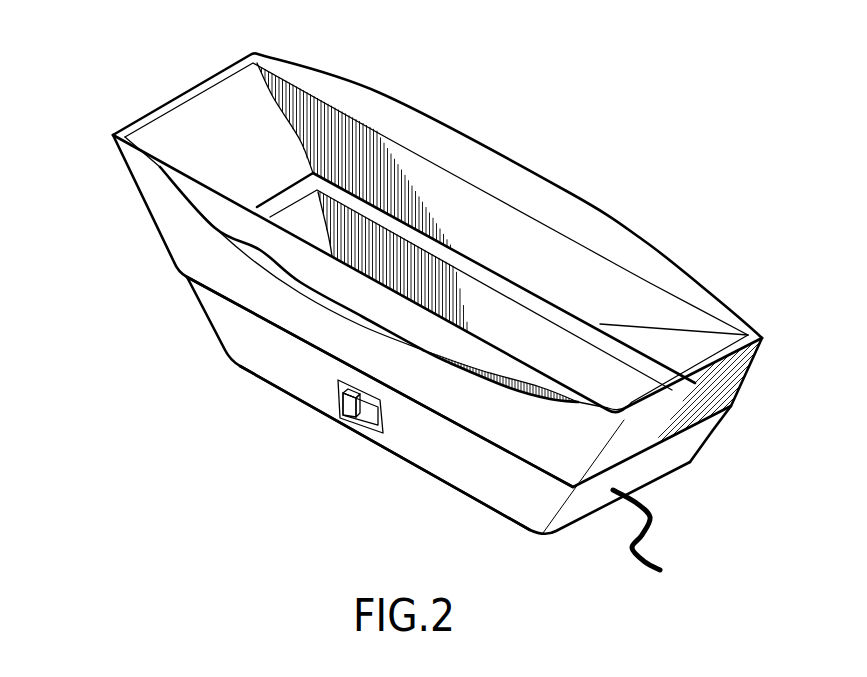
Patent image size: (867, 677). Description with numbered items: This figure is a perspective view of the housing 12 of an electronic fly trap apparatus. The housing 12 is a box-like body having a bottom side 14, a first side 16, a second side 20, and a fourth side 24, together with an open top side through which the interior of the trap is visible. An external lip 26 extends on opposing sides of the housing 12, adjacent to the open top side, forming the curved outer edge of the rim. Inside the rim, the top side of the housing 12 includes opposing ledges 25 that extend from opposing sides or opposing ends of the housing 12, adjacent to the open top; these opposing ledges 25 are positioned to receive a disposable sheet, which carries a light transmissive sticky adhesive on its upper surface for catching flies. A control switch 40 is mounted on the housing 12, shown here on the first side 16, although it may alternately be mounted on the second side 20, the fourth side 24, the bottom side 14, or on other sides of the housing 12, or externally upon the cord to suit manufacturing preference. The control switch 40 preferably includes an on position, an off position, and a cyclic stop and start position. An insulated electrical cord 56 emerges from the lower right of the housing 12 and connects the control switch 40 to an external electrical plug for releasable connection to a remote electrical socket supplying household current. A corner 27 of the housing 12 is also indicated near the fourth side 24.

The housing 12 is at (190, 312).
The bottom side 14 is at (463, 493).
The first side 16 is at (412, 437).
The second side 20 is at (135, 193).
The fourth side 24 is at (687, 457).
The opposing ledges 25 is at (272, 203).
The external lip 26 is at (567, 199).
The corner 27 is at (713, 434).
The control switch 40 is at (343, 407).
The electrical cord 56 is at (657, 528).